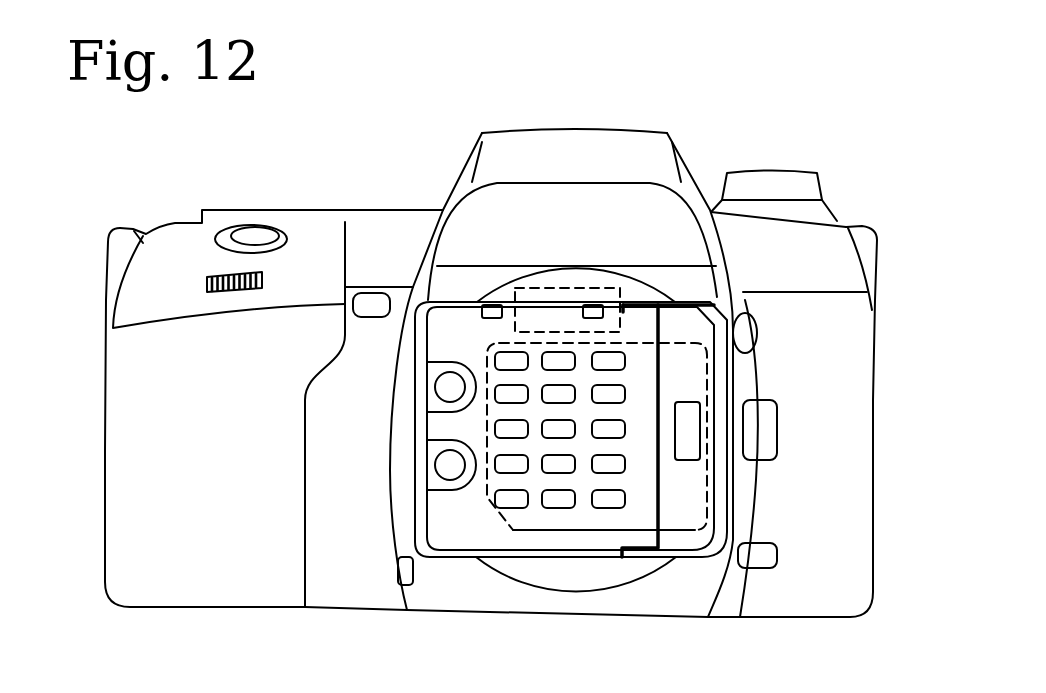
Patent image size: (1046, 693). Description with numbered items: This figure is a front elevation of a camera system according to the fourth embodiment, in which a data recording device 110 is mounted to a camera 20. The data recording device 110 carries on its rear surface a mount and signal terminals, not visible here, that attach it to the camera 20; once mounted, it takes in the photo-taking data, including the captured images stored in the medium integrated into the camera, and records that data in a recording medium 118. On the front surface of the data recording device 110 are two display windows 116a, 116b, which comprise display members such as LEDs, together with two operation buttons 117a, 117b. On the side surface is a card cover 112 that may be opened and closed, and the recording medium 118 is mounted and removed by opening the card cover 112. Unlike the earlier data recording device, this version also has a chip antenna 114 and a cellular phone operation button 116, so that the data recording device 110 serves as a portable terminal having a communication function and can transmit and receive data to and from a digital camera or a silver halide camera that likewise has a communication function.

The camera 20 is at (711, 144).
The data recording device 110 is at (538, 558).
The card cover 112 is at (718, 484).
The chip antenna 114 is at (553, 288).
The cellular phone operation button 116 is at (632, 397).
The display window 116a is at (494, 304).
The display window 116b is at (597, 304).
The operation button 117a is at (445, 387).
The operation button 117b is at (445, 465).
The recording medium 118 is at (598, 531).